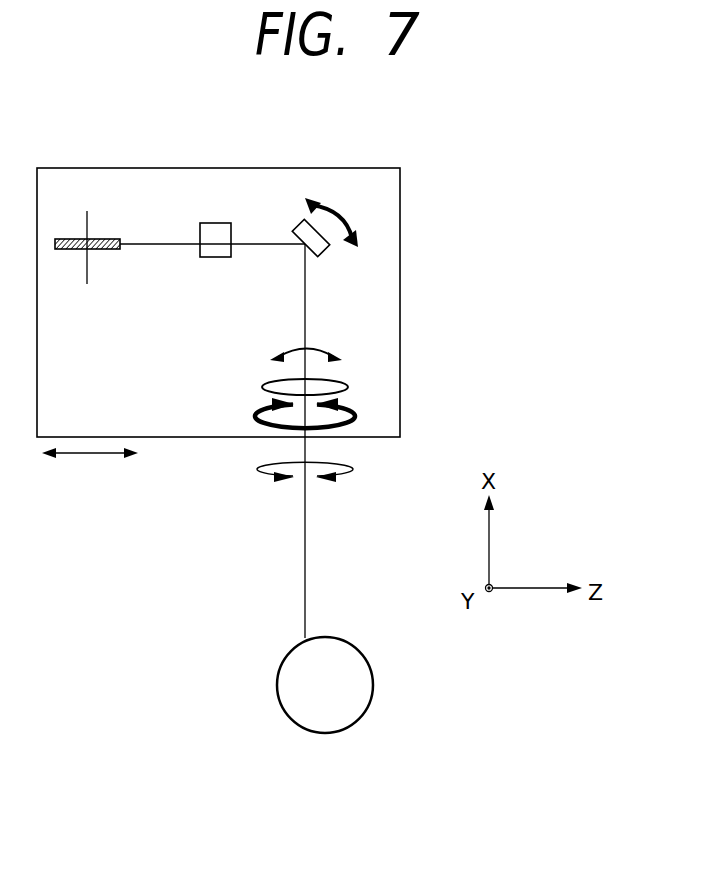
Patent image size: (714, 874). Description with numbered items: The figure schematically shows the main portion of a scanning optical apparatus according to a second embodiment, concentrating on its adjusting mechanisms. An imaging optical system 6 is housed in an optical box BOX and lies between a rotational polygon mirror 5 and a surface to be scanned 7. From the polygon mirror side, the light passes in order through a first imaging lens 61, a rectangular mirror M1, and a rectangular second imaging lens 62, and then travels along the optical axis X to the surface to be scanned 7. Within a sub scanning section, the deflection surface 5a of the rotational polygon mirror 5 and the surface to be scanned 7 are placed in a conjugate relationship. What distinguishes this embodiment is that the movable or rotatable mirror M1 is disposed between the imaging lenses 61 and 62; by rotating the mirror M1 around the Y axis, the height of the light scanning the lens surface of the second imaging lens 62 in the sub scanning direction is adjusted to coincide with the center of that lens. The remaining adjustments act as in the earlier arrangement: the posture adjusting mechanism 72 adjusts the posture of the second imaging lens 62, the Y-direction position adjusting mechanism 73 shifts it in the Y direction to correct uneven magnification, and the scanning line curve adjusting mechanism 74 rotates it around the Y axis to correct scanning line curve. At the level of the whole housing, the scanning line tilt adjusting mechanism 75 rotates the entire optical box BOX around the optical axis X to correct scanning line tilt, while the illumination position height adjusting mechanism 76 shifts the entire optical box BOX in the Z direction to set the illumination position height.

The rotational polygon mirror 5 is at (108, 255).
The deflection surface 5a is at (118, 240).
The imaging optical system 6 is at (260, 178).
The optical box BOX is at (400, 237).
The first imaging lens 61 is at (206, 258).
The mirror M1 is at (321, 258).
The second imaging lens 62 is at (338, 395).
The Y-direction position adjusting mechanism G2dY 73 is at (348, 383).
The posture adjusting mechanism G2Rx 72 is at (353, 413).
The scanning line curve adjusting mechanism G2Ry 74 is at (292, 350).
The scanning line tilt adjusting mechanism LSURx 75 is at (260, 470).
The illumination position height adjusting mechanism LSUdZ 76 is at (88, 454).
The optical axis X is at (305, 572).
The surface to be scanned 7 is at (373, 684).